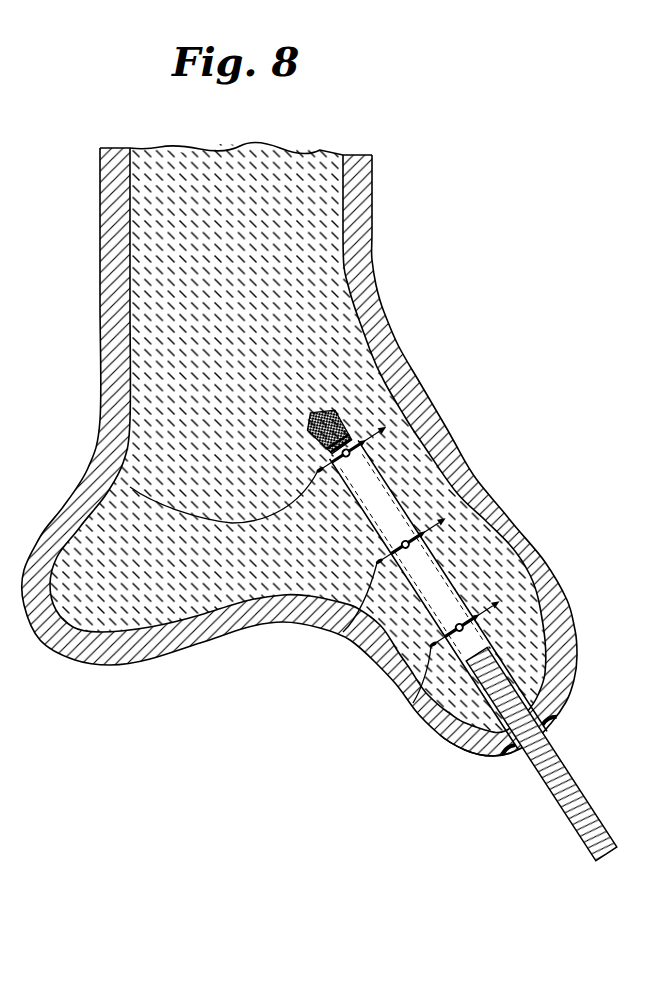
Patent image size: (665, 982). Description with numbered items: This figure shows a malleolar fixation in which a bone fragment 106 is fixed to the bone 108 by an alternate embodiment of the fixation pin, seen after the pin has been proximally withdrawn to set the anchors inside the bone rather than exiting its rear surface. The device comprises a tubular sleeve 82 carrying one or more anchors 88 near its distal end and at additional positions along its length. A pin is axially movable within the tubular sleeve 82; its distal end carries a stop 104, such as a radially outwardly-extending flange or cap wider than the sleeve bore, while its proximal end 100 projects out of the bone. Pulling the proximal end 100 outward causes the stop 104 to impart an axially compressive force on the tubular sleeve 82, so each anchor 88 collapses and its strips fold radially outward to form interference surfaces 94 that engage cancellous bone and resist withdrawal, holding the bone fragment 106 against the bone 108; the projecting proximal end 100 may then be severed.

The tubular sleeve 82 is at (453, 586).
The anchor 88 is at (385, 425).
The interference surface 94 is at (130, 487).
The proximal end of pin 100 is at (592, 851).
The stop 104 is at (350, 437).
The bone fragment 106 is at (465, 753).
The bone 108 is at (127, 656).